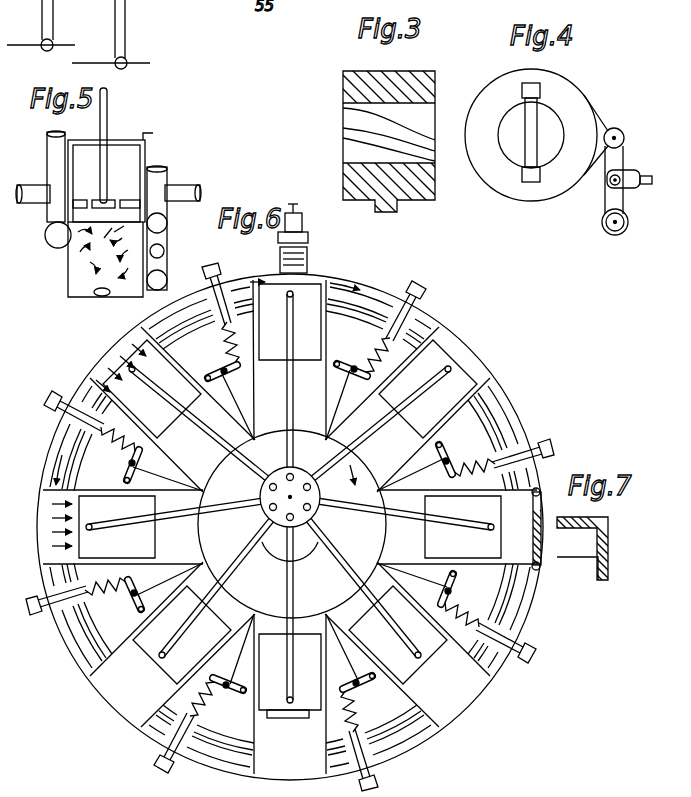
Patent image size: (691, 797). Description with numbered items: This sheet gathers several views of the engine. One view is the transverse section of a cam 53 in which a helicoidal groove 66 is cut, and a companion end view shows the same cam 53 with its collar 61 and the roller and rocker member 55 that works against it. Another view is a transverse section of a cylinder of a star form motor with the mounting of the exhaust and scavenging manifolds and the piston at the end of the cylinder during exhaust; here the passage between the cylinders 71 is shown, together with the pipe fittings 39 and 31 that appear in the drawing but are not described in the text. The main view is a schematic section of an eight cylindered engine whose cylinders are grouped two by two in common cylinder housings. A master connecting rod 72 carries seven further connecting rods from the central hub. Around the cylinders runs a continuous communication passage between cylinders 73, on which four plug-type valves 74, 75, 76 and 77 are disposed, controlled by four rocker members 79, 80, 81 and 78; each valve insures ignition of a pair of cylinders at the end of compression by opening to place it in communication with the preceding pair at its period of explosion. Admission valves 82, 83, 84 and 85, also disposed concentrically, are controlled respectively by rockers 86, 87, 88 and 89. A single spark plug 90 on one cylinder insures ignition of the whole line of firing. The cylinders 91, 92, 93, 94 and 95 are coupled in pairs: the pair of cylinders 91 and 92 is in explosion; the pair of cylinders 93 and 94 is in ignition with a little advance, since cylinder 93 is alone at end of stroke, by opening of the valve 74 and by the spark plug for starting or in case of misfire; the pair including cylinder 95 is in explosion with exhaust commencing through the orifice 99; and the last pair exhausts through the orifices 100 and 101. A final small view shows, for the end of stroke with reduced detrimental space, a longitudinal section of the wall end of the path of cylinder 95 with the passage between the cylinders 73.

In FIG. 5, the check valve pipe 31 is at (163, 248).
In FIG. 5, the supply pipe 39 is at (55, 178).
In FIG. 3, the cam 53 is at (347, 177).
In FIG. 4, the cam 53 is at (531, 135).
In FIG. 4, the roller and rocker member 55 is at (633, 128).
In FIG. 4, the collar 61 is at (532, 128).
In FIG. 3, the helicoidal groove 66 is at (392, 136).
In FIG. 5, the passage between the cylinders 71 is at (100, 297).
In FIG. 6, the master connecting rod 72 is at (287, 396).
In FIG. 7, the continuous communication passage between cylinders 73 is at (604, 516).
In FIG. 6, the continuous communication passage between cylinders 73 is at (57, 452).
In FIG. 6, the valve of the plug type 74 is at (218, 313).
In FIG. 6, the valve of the plug type 75 is at (76, 597).
In FIG. 6, the valve of the plug type 76 is at (361, 740).
In FIG. 6, the valve of the plug type 77 is at (503, 457).
In FIG. 6, the rocker member 78 is at (414, 467).
In FIG. 6, the rocker member 79 is at (230, 399).
In FIG. 6, the rocker member 80 is at (165, 587).
In FIG. 6, the rocker member 81 is at (350, 651).
In FIG. 6, the admission valve 82 is at (89, 423).
In FIG. 6, the admission valve 83 is at (188, 727).
In FIG. 6, the admission valve 84 is at (490, 626).
In FIG. 6, the admission valve 85 is at (392, 326).
In FIG. 6, the rocker 86 is at (164, 469).
In FIG. 6, the rocker 87 is at (232, 653).
In FIG. 6, the rocker 88 is at (416, 583).
In FIG. 6, the rocker 89 is at (346, 401).
In FIG. 6, the spark plug 90 is at (308, 253).
In FIG. 6, the cylinder 91 is at (166, 527).
In FIG. 6, the cylinder 92 is at (191, 413).
In FIG. 6, the cylinder 93 is at (289, 360).
In FIG. 6, the cylinder 94 is at (389, 413).
In FIG. 6, the cylinder 95 is at (413, 527).
In FIG. 6, the orifice 99 is at (389, 611).
In FIG. 6, the orifice 100 is at (290, 635).
In FIG. 6, the orifice 101 is at (191, 611).